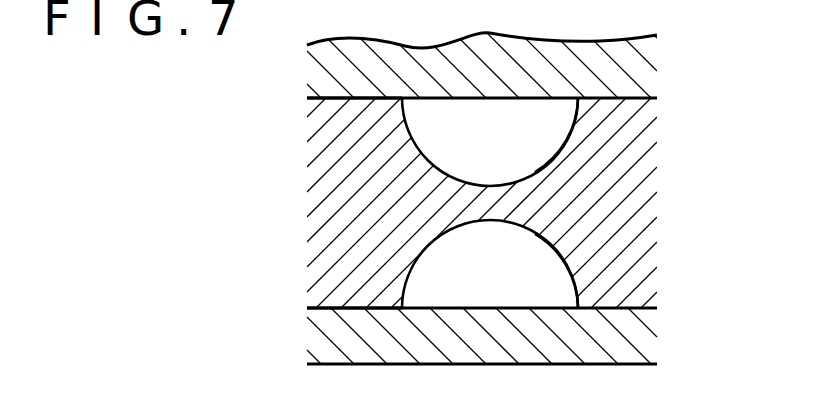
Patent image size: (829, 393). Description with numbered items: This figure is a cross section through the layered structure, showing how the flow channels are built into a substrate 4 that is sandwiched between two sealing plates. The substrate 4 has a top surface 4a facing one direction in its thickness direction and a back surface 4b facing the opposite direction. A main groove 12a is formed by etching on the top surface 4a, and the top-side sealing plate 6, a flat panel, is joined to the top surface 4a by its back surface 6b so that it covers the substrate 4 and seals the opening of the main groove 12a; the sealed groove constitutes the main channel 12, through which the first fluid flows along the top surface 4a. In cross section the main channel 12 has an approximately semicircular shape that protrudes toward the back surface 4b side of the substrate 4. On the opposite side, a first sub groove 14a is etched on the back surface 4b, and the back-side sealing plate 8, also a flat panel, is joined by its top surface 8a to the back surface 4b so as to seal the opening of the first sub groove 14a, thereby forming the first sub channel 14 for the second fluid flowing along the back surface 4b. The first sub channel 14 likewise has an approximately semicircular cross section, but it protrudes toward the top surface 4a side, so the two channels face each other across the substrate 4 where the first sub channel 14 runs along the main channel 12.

The substrate 4 is at (650, 204).
The top surface of the substrate 4a is at (363, 98).
The back surface of the substrate 4b is at (363, 308).
The top-side sealing plate 6 is at (647, 67).
The back surface of the top-side sealing plate 6b is at (646, 118).
The back-side sealing plate 8 is at (648, 339).
The top surface of the back-side sealing plate 8a is at (645, 299).
The main channel 12 is at (560, 133).
The main groove 12a is at (535, 168).
The first sub channel 14 is at (560, 285).
The first sub groove 14a is at (533, 237).